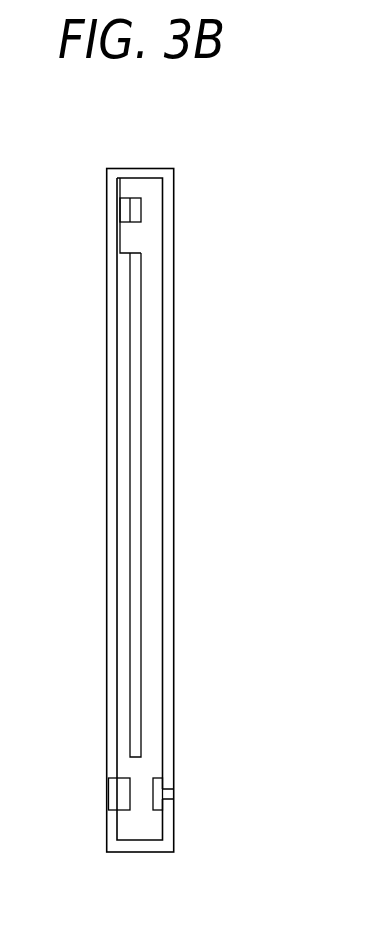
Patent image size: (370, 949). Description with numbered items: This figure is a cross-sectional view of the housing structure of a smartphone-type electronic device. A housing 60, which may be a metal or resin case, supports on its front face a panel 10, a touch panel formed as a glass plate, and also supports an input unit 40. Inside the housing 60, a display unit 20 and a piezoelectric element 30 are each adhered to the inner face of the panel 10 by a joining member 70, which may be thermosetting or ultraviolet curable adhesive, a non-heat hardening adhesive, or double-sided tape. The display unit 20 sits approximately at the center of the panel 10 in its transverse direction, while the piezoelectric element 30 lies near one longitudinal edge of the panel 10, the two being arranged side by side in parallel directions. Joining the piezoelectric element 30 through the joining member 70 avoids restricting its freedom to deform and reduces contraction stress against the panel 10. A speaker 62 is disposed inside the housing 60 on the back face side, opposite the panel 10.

The panel 10 is at (110, 233).
The display unit 20 is at (132, 347).
The piezoelectric element 30 is at (136, 198).
The input unit 40 is at (118, 797).
The housing 60 is at (168, 218).
The speaker 62 is at (153, 778).
The joining member 70 is at (127, 198).